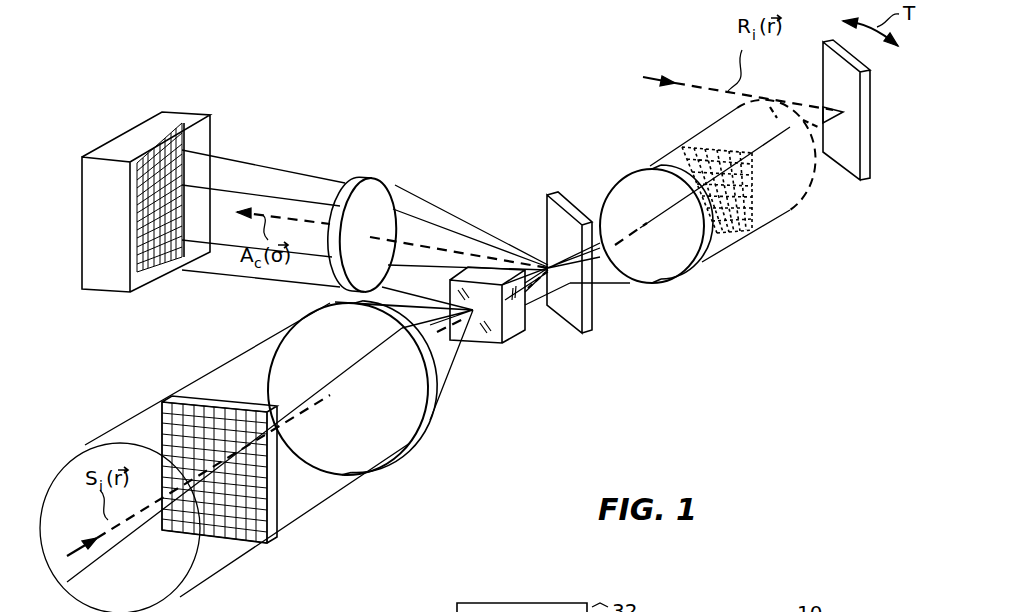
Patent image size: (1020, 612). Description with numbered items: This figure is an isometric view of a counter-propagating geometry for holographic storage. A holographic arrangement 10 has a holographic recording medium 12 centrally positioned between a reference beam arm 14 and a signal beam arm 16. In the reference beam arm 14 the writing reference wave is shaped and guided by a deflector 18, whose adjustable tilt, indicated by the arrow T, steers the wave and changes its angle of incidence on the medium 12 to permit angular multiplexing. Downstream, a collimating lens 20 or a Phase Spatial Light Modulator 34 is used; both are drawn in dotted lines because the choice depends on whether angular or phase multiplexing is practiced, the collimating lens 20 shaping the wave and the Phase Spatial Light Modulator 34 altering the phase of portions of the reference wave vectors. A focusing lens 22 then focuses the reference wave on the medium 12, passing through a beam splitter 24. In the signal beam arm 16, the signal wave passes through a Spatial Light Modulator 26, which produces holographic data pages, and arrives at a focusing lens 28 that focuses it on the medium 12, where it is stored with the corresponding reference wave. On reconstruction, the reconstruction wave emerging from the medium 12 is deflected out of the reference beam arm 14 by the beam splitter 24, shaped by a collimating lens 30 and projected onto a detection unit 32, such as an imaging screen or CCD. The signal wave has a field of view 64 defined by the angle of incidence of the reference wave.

The holographic arrangement 10 is at (345, 78).
The holographic recording medium 12 is at (512, 345).
The reference beam arm 14 is at (715, 317).
The signal beam arm 16 is at (167, 362).
The deflector 18 is at (870, 115).
The collimating lens 20 is at (813, 186).
The focusing lens 22 is at (630, 168).
The beam splitter 24 is at (590, 333).
The Spatial Light Modulator 26 is at (262, 545).
The focusing lens 28 is at (410, 445).
The collimating lens 30 is at (370, 178).
The detection unit 32 is at (82, 218).
The Phase Spatial Light Modulator 34 is at (757, 235).
The field of view 64 is at (70, 455).